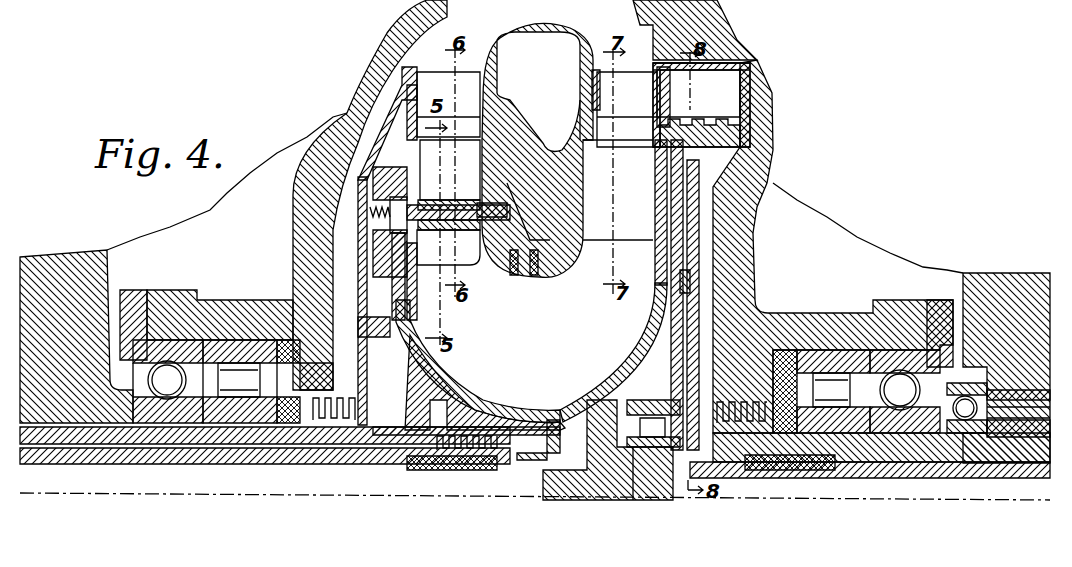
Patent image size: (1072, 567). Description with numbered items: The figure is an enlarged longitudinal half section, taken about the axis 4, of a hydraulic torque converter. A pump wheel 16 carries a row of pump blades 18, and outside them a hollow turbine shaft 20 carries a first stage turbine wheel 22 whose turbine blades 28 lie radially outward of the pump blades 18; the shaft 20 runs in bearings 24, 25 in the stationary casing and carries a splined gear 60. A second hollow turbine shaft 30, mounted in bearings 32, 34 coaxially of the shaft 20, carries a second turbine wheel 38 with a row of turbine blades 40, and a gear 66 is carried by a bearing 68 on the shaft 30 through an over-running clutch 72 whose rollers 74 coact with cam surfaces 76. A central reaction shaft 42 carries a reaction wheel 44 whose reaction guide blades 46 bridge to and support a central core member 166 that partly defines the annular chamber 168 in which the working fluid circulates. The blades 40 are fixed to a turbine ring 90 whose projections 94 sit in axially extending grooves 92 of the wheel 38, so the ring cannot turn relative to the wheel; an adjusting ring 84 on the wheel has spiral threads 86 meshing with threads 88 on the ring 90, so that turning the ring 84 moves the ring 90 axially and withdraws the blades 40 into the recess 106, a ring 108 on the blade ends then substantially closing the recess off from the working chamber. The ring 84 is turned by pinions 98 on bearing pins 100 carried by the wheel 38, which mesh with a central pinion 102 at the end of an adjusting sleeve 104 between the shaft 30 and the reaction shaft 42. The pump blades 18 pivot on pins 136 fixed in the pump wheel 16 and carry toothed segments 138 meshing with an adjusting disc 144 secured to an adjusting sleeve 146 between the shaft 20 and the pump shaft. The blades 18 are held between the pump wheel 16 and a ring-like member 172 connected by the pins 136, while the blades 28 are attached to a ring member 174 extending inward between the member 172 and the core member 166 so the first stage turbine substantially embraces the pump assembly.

The centerline axis 4 is at (20, 484).
The pump member or wheel 16 is at (448, 377).
The pump blades 18 is at (442, 263).
The hollow turbine shaft 20 is at (190, 444).
The turbine wheel 22 is at (358, 262).
The bearing 24 is at (238, 370).
The bearing 25 is at (175, 365).
The turbine blades 28 is at (444, 78).
The second hollow turbine shaft 30 is at (913, 462).
The bearing 32 is at (828, 370).
The bearing 34 is at (897, 372).
The turbine wheel 38 is at (656, 176).
The turbine blades 40 is at (635, 117).
The reaction shaft 42 is at (1050, 490).
The reaction wheel 44 is at (638, 362).
The reaction guide blades 46 is at (634, 238).
The gear 60 is at (112, 269).
The gear 66 is at (990, 280).
The bearing 68 is at (965, 425).
The over-running or free wheel clutch 72 is at (1040, 397).
The rollers 74 is at (1040, 413).
The cam surfaces 76 is at (1040, 435).
The adjusting ring 84 is at (750, 125).
The spiral grooves or threads 86 is at (725, 118).
The threads 88 is at (678, 122).
The turbine ring 90 is at (658, 105).
The axially extending grooves 92 is at (738, 50).
The projections 94 is at (658, 66).
The pinions 98 is at (700, 180).
The bearing pins 100 is at (700, 283).
The central pinion 102 is at (700, 460).
The adjusting sleeve 104 is at (797, 470).
The recess 106 is at (728, 80).
The ring 108 is at (592, 85).
The pins 136 is at (440, 206).
The segments 138 is at (405, 300).
The adjusting disc 144 is at (487, 420).
The adjusting sleeve 146 is at (380, 464).
The central core member 166 is at (579, 135).
The annular chamber 168 is at (537, 182).
The ring-like member 172 is at (505, 278).
The ring member 174 is at (523, 110).